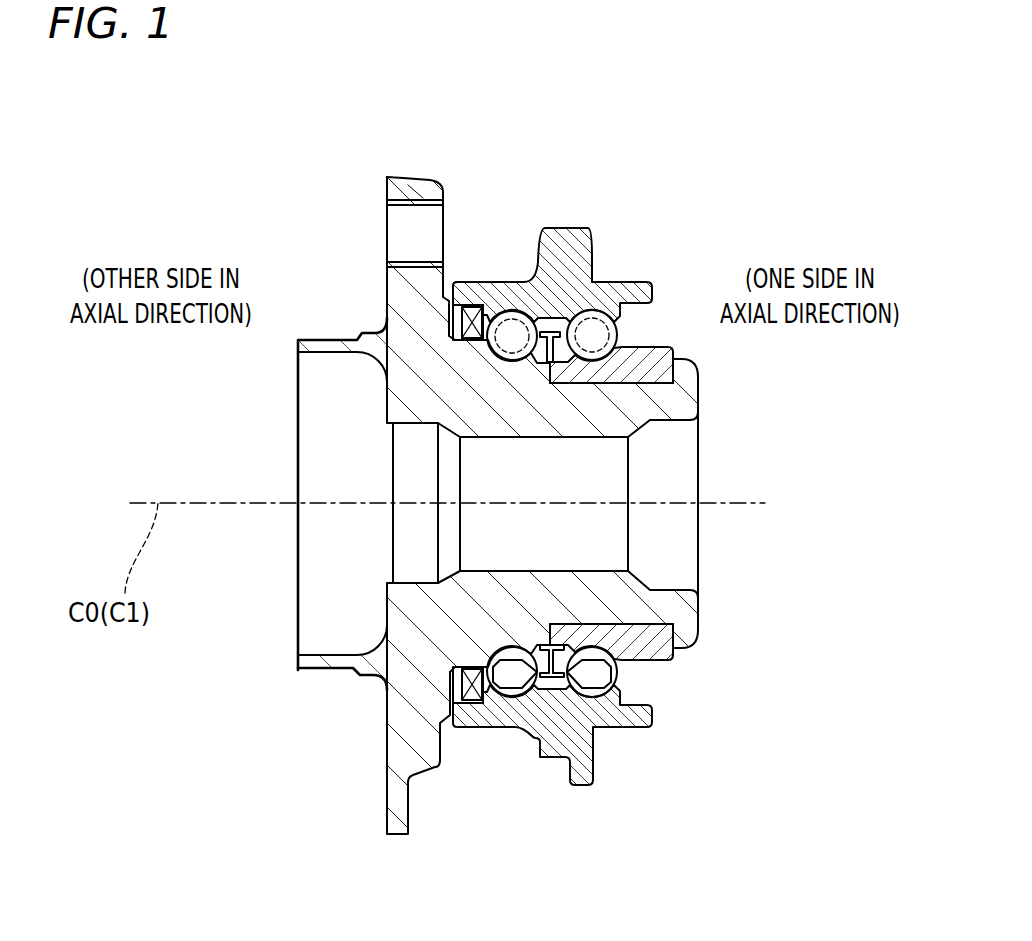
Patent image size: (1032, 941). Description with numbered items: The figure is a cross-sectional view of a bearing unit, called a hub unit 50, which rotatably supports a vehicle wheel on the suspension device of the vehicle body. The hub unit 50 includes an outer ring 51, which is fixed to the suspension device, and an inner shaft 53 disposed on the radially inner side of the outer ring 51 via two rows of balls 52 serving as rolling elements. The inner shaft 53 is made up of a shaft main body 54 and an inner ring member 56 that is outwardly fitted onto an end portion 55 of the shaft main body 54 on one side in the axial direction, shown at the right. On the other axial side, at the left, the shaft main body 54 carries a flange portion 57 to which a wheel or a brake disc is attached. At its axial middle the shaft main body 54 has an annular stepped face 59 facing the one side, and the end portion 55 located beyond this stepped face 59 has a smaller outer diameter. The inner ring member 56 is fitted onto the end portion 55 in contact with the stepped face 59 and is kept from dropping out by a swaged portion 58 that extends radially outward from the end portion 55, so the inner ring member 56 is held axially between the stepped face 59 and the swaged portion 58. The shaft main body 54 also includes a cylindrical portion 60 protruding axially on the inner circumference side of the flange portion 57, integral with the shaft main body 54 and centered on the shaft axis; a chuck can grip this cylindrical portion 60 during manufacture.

The hub unit 50 is at (630, 283).
The outer ring 51 is at (562, 268).
The balls 52 is at (510, 337).
The inner shaft 53 is at (386, 408).
The shaft main body 54 is at (503, 600).
The end portion 55 is at (647, 608).
The inner ring member 56 is at (657, 665).
The flange portion 57 is at (416, 180).
The swaged portion 58 is at (683, 642).
The stepped face 59 is at (577, 627).
The cylindrical portion 60 is at (328, 655).